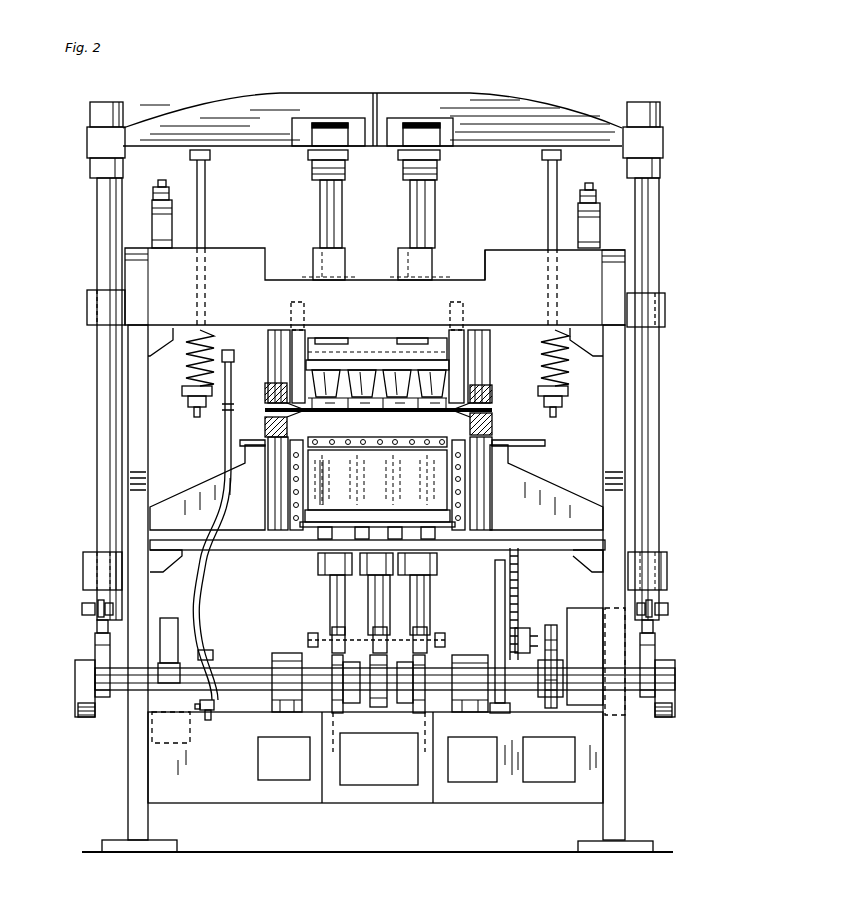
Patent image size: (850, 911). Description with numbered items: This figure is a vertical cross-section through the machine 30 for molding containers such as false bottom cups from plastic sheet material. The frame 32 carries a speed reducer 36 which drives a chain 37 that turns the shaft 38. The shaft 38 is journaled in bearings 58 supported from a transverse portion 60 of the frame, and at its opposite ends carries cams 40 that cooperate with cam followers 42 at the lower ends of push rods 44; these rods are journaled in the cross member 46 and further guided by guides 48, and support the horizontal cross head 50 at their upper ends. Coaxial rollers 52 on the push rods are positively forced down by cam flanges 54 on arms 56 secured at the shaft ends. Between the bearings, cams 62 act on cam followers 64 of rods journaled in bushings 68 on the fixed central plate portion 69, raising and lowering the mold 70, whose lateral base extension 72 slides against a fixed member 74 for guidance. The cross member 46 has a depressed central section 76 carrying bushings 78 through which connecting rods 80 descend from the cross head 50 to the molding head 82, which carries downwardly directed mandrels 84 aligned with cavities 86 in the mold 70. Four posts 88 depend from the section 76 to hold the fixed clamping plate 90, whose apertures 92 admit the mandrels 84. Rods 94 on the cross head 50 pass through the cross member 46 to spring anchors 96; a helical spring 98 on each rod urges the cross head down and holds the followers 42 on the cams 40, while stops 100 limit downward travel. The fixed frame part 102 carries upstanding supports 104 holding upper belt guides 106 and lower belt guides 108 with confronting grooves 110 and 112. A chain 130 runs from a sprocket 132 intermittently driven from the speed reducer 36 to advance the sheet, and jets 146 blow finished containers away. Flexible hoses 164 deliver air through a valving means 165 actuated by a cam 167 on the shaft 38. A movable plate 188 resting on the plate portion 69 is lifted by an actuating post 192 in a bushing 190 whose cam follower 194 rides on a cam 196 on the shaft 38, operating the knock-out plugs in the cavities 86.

The machine 30 is at (98, 802).
The frame 32 is at (130, 765).
The speed reducer 36 is at (590, 612).
The chain 37 is at (550, 630).
The shaft 38 is at (270, 664).
The cams 40 is at (95, 644).
The cam followers 42 is at (97, 626).
The push rods 44 is at (105, 393).
The cross member 46 is at (243, 260).
The guides 48 is at (90, 568).
The cross head 50 is at (480, 108).
The rollers 52 is at (82, 608).
The cam flanges 54 is at (88, 718).
The arms 56 is at (75, 700).
The bearings 58 is at (276, 656).
The transverse portion of the frame 60 is at (284, 758).
The cams 62 is at (332, 700).
The cam followers 64 is at (336, 632).
The bushings 68 is at (320, 572).
The central plate portion 69 is at (272, 550).
The mold 70 is at (343, 503).
The lateral base extension 72 is at (305, 518).
The fixed member 74 is at (292, 500).
The depressed central section 76 is at (466, 272).
The bushings 78 is at (408, 256).
The connecting rods 80 is at (415, 197).
The molding head 82 is at (355, 348).
The mandrels 84 is at (390, 370).
The cavities 86 is at (345, 503).
The posts 88 is at (298, 334).
The clamping plate 90 is at (412, 414).
The apertures 92 is at (398, 412).
The rods 94 is at (205, 180).
The spring anchors 96 is at (185, 390).
The helical spring 98 is at (192, 350).
The stops 100 is at (172, 195).
The fixed frame part 102 is at (195, 495).
The upstanding supports 104 is at (262, 433).
The upper belt guides 106 is at (266, 391).
The lower belt guides 108 is at (270, 428).
The grooves 110 is at (265, 404).
The grooves 112 is at (280, 418).
The chain 130 is at (519, 558).
The sprocket 132 is at (520, 640).
The jets 146 is at (368, 438).
The flexible hoses 164 is at (200, 589).
The valving means 165 is at (208, 712).
The cam 167 is at (208, 652).
The movable plate 188 is at (375, 530).
The bushing 190 is at (388, 555).
The actuating post 192 is at (385, 608).
The cam follower 194 is at (380, 622).
The cam 196 is at (372, 712).